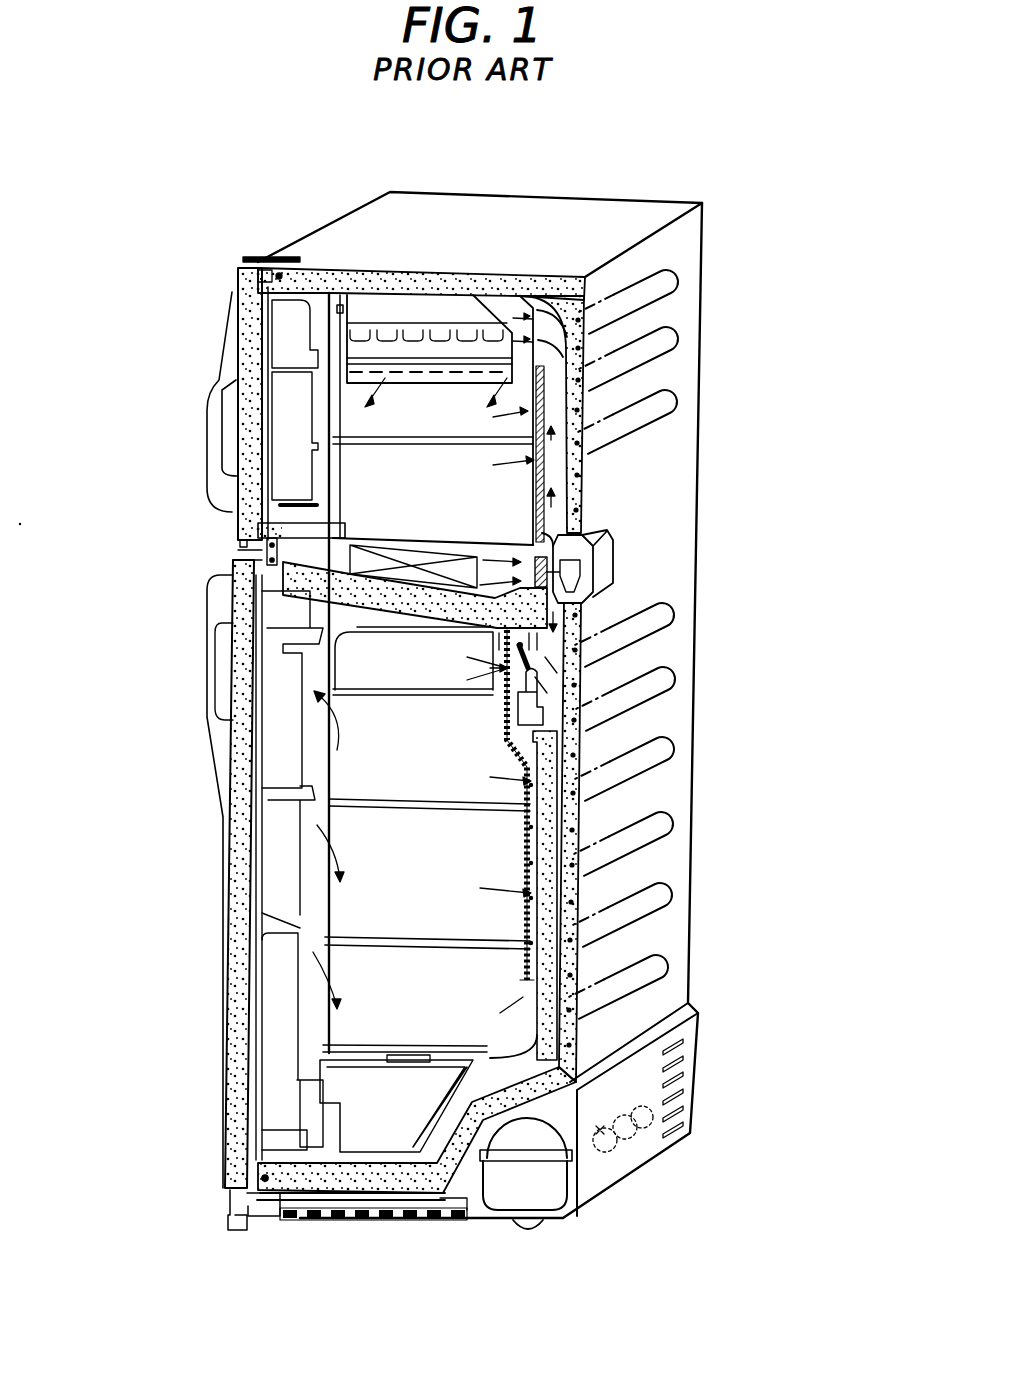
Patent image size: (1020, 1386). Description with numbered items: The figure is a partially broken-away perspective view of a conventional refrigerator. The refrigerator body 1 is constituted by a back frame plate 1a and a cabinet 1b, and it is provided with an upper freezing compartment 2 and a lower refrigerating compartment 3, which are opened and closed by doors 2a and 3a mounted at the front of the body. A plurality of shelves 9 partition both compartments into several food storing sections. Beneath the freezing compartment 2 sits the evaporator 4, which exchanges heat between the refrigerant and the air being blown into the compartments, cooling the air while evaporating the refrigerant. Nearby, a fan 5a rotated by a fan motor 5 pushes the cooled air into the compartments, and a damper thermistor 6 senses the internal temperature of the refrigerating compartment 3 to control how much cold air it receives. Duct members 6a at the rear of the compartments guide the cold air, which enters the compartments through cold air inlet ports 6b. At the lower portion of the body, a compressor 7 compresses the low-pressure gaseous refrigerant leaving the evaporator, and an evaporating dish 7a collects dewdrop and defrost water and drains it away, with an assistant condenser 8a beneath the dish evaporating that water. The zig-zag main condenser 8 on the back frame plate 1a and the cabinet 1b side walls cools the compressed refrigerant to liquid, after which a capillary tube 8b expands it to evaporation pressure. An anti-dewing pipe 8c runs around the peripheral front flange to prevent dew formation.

The refrigerator body 1 is at (703, 265).
The back frame plate 1a is at (683, 480).
The cabinet 1b is at (519, 214).
The freezing compartment 2 is at (340, 402).
The door 2a is at (248, 344).
The refrigerating compartment 3 is at (347, 923).
The door 3a is at (235, 980).
The evaporator 4 is at (300, 582).
The fan motor 5 is at (587, 568).
The fan 5a is at (573, 520).
The damper thermistor 6 is at (540, 707).
The duct member 6a is at (625, 447).
The cold air inlet port 6b is at (600, 403).
The compressor 7 is at (510, 1203).
The evaporating dish 7a is at (268, 1205).
The main condenser 8 is at (673, 733).
The assistant condenser 8a is at (357, 1223).
The capillary tube 8b is at (627, 1133).
The anti-dewing pipe 8c is at (240, 280).
The shelf 9 is at (340, 458).